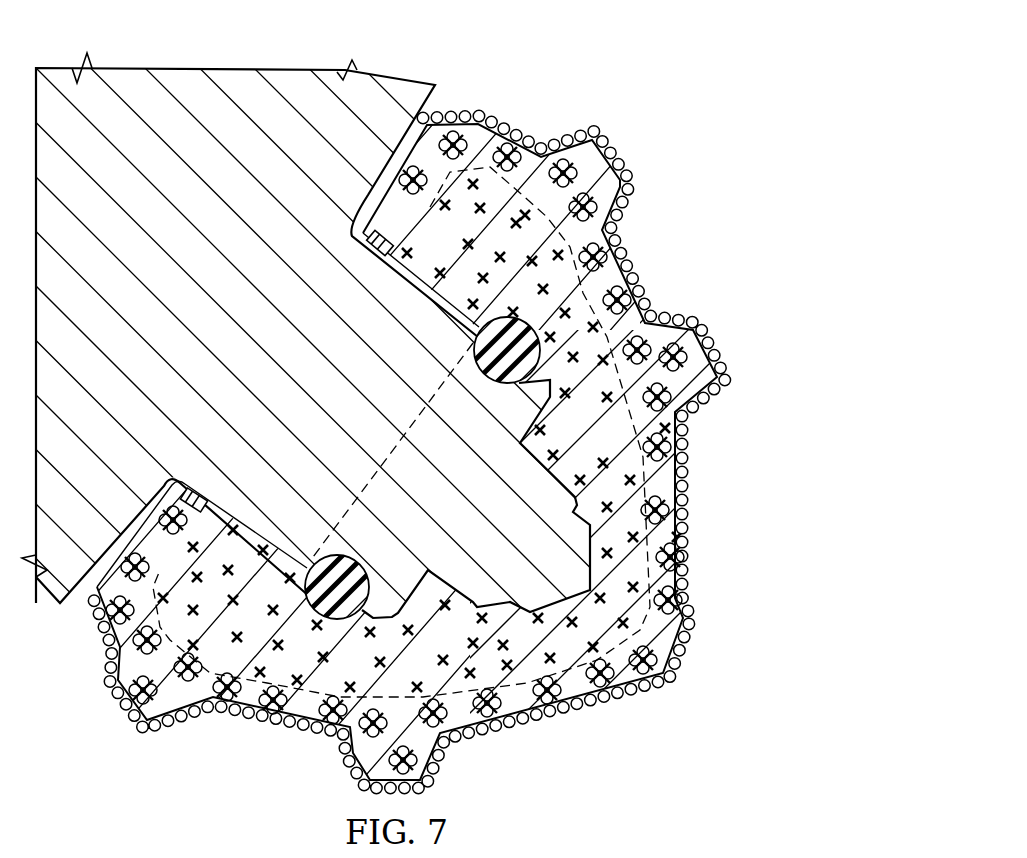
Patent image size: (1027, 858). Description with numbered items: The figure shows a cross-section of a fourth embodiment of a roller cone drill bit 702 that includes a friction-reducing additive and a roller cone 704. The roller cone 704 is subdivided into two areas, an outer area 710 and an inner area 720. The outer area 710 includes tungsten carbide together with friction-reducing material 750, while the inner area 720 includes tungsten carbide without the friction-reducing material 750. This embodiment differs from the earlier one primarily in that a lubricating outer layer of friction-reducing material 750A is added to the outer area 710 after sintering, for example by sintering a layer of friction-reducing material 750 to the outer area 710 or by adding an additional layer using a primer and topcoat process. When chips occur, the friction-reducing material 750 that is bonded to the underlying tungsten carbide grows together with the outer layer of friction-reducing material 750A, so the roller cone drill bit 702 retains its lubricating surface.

The roller cone drill bit 702 is at (648, 54).
The roller cone 704 is at (609, 446).
The outer area 710 is at (472, 131).
The inner area 720 is at (582, 290).
The friction-reducing material 750 is at (561, 148).
The outer lubricating layer of friction-reducing material 750A is at (720, 377).